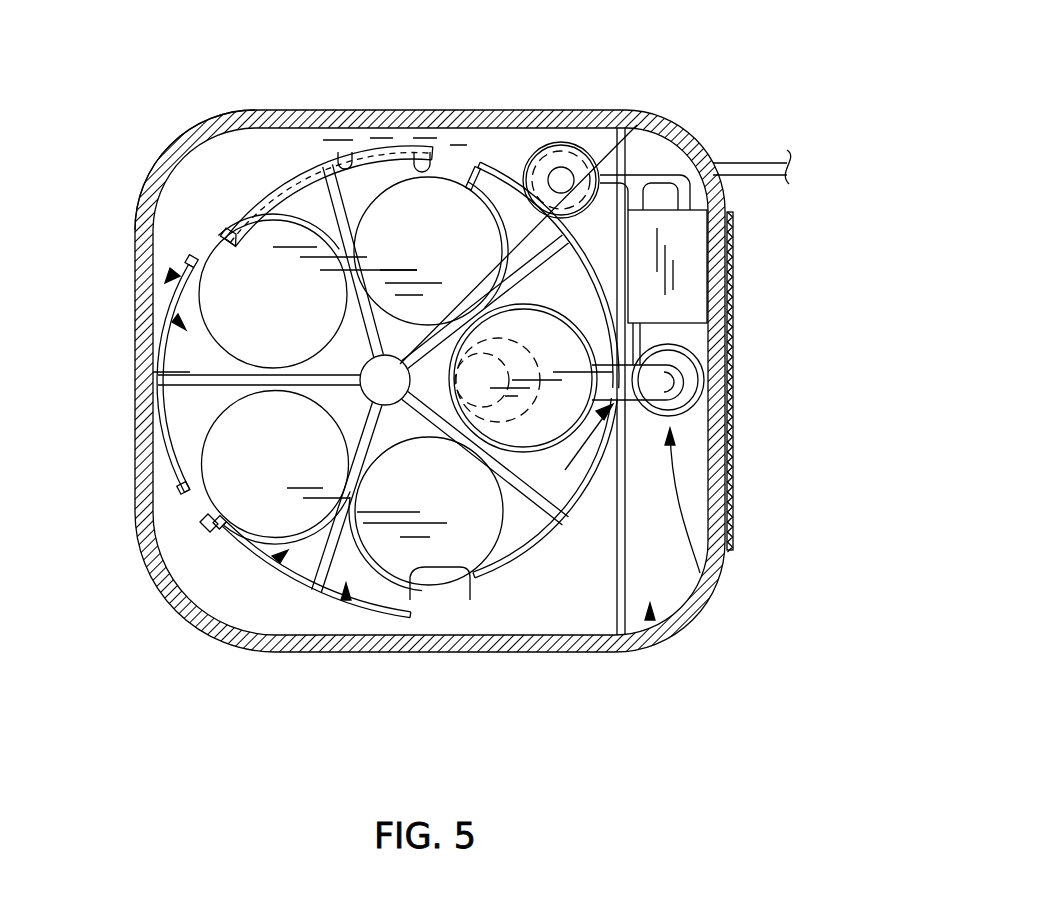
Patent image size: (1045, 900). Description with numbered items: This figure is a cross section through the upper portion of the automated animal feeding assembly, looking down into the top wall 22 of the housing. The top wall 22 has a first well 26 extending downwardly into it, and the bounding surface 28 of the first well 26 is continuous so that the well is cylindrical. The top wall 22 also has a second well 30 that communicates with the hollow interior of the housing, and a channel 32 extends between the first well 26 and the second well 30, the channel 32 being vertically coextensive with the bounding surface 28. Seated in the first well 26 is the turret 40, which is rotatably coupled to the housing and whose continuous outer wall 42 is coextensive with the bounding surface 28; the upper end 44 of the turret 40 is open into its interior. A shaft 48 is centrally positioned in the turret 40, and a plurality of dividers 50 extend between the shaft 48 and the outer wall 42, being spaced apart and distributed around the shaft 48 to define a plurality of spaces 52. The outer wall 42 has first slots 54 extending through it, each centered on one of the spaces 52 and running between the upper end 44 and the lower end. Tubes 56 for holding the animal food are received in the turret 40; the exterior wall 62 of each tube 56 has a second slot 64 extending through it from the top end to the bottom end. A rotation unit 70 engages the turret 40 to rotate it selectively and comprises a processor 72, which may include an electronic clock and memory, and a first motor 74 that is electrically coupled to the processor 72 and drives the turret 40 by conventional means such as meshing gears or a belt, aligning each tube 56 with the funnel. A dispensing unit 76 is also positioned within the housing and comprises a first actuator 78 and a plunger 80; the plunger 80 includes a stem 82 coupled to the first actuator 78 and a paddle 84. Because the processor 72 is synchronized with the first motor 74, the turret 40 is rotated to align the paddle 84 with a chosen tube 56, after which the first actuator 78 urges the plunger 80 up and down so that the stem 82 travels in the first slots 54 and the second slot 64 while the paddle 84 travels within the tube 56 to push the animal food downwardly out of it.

The top wall 22 is at (230, 150).
The first well 26 is at (350, 163).
The bounding surface 28 is at (436, 152).
The second well 30 is at (650, 612).
The channel 32 is at (590, 480).
The turret 40 is at (213, 121).
The outer wall 42 is at (266, 585).
The upper end 44 is at (290, 183).
The shaft 48 is at (168, 342).
The dividers 50 is at (556, 320).
The spaces 52 is at (187, 330).
The first slots 54 is at (192, 262).
The tubes 56 is at (157, 372).
The exterior wall 62 is at (390, 183).
The second slot 64 is at (412, 600).
The rotation unit 70 is at (655, 210).
The processor 72 is at (691, 178).
The first motor 74 is at (560, 141).
The dispensing unit 76 is at (630, 402).
The first actuator 78 is at (682, 415).
The plunger 80 is at (698, 352).
The stem 82 is at (700, 573).
The paddle 84 is at (637, 125).